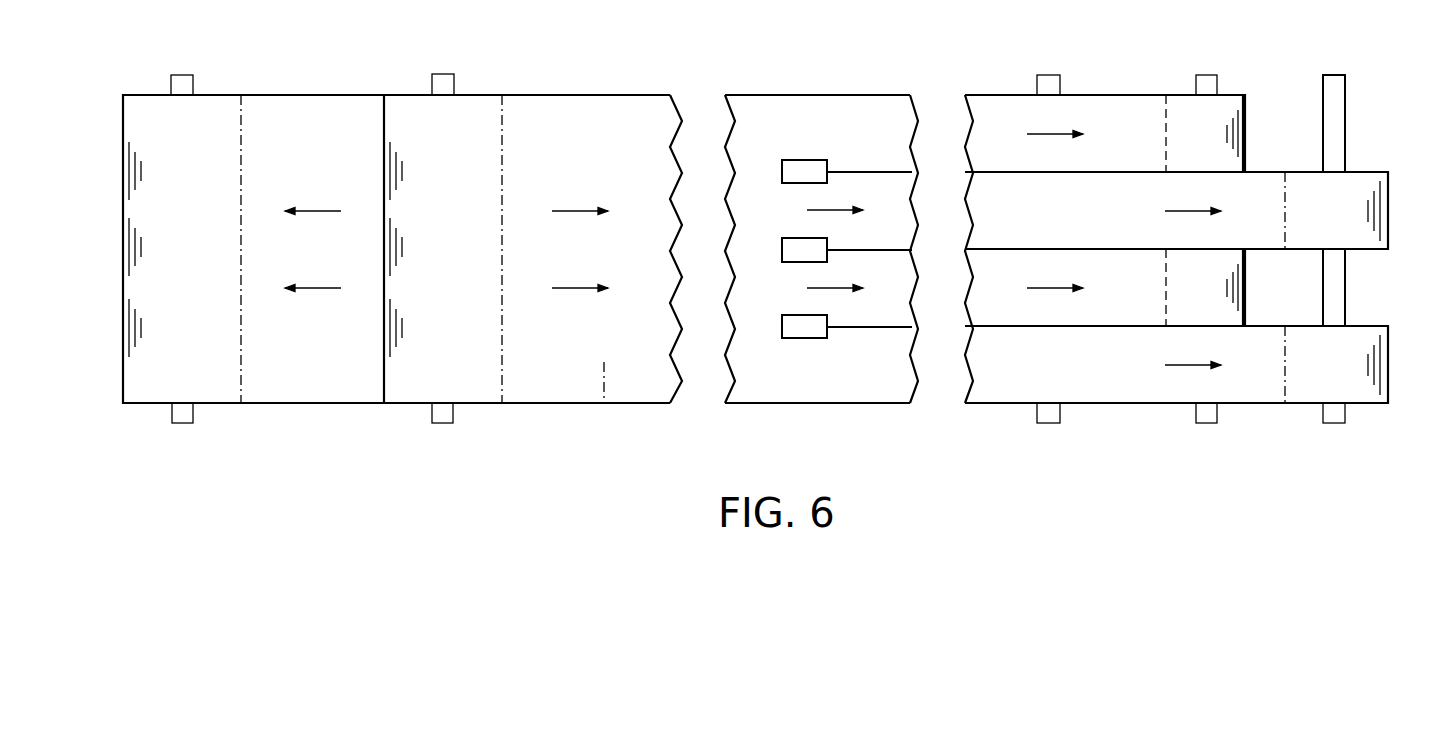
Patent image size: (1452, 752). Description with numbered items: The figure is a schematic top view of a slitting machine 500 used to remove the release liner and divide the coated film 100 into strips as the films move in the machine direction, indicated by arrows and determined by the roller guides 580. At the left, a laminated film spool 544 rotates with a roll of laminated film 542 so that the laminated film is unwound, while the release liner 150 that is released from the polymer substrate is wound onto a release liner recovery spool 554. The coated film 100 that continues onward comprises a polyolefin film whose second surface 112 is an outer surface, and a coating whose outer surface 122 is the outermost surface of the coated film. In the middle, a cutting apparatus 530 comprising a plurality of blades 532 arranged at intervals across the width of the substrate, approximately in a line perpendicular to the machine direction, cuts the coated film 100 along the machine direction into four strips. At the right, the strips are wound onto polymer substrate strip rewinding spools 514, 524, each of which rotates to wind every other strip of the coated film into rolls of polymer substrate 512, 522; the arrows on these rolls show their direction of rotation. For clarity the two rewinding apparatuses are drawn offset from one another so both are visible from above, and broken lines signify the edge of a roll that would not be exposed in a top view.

The coated film 100 is at (536, 94).
The outer surface 122 is at (618, 104).
The release liner 150 is at (310, 405).
The second surface 112 is at (604, 406).
The roll of polymer substrate 522 is at (122, 207).
The roll of laminated film 542 is at (381, 127).
The release liner recovery spool 554 is at (180, 425).
The laminated film spool 544 is at (442, 425).
The cutting apparatus 530 is at (805, 159).
The blades 532 is at (830, 167).
The roller guides 580 is at (1048, 74).
The polymer substrate strip rewinding spool 514 is at (1204, 74).
The polymer substrate strip rewinding spool 524 is at (1336, 74).
The roll of polymer substrate 512 is at (1247, 128).
The slitting machine 500 is at (309, 584).